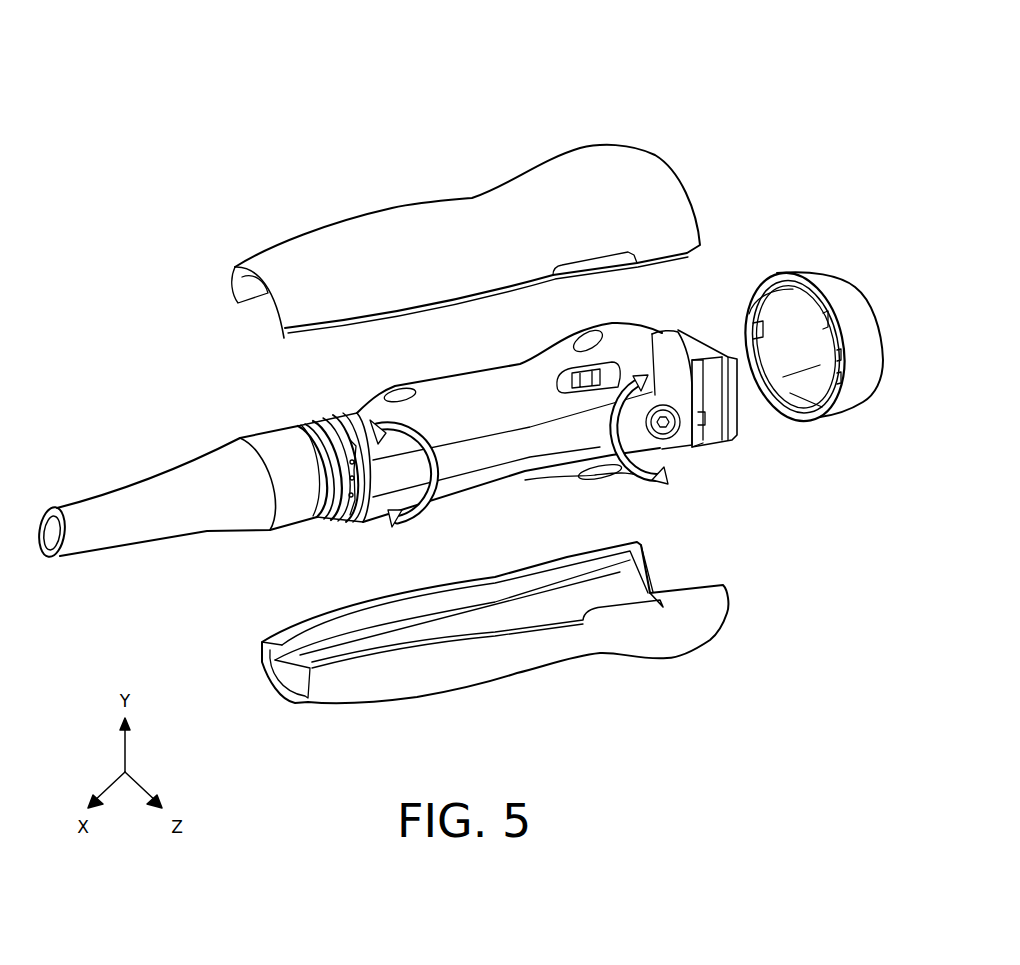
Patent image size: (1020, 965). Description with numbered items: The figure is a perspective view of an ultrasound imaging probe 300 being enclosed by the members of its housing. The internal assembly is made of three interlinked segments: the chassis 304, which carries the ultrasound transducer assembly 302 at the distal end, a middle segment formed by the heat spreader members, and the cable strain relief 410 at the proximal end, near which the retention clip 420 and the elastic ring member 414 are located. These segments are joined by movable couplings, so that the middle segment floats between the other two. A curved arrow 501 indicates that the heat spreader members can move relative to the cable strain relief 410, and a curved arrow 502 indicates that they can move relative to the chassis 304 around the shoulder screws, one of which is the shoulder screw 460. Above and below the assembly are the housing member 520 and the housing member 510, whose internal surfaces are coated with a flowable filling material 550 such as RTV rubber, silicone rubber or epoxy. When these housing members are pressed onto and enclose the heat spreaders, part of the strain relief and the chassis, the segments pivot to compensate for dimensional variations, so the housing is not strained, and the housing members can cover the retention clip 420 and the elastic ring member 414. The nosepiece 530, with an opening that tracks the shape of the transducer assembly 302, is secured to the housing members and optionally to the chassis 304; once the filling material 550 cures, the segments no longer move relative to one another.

The ultrasound imaging probe 300 is at (801, 84).
The ultrasound transducer assembly 302 is at (723, 343).
The chassis 304 is at (705, 427).
The cable strain relief 410 is at (155, 474).
The elastic ring member 414 is at (320, 425).
The retention clip 420 is at (350, 522).
The shoulder screw 460 is at (663, 404).
The curved arrow 501 is at (372, 420).
The curved arrow 502 is at (663, 477).
The housing member 510 is at (675, 657).
The housing member 520 is at (473, 194).
The nosepiece 530 is at (835, 277).
The filling material 550 is at (487, 613).